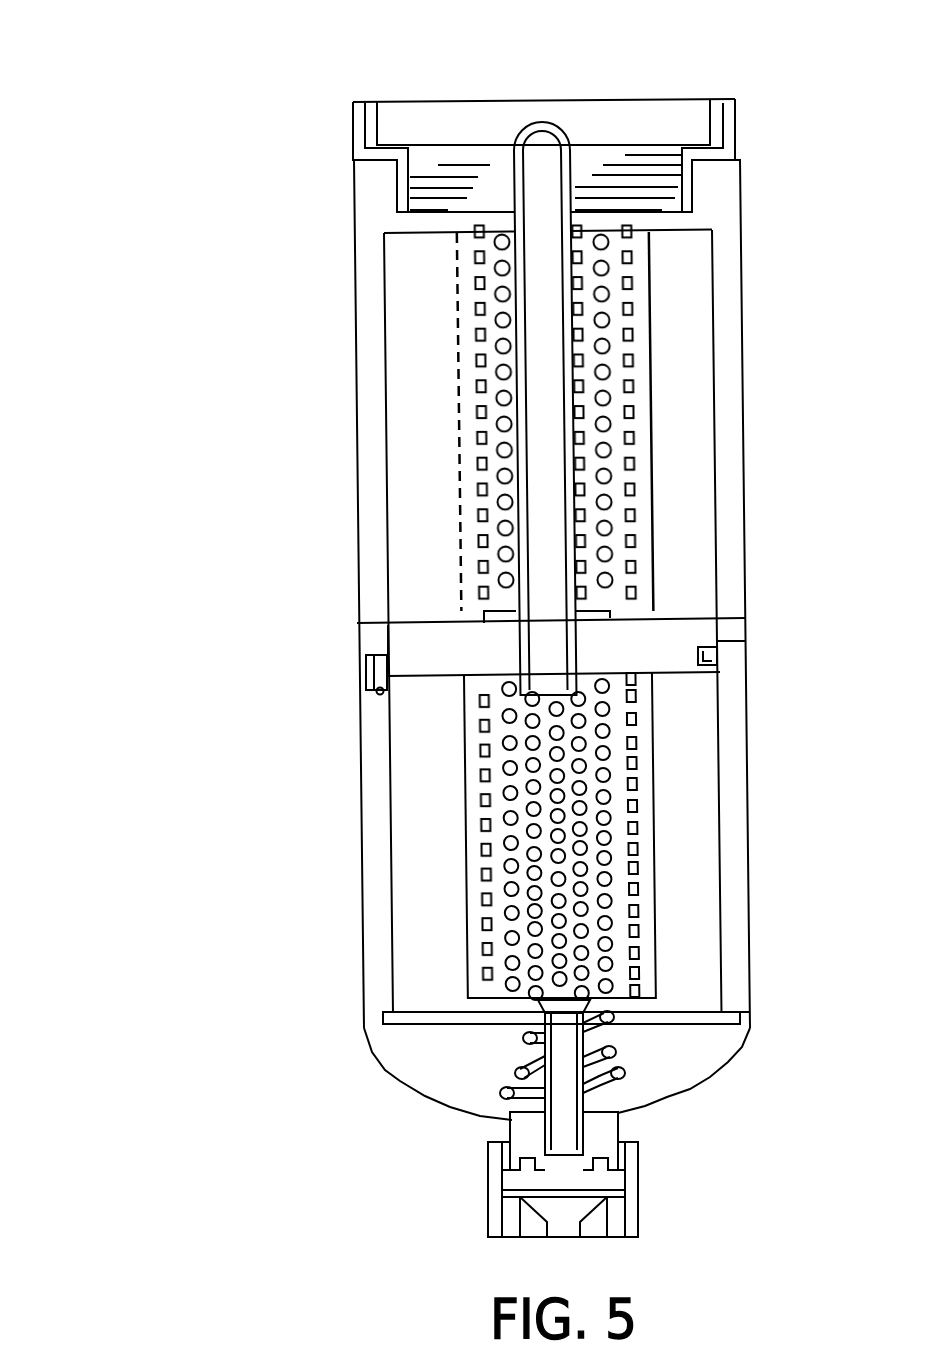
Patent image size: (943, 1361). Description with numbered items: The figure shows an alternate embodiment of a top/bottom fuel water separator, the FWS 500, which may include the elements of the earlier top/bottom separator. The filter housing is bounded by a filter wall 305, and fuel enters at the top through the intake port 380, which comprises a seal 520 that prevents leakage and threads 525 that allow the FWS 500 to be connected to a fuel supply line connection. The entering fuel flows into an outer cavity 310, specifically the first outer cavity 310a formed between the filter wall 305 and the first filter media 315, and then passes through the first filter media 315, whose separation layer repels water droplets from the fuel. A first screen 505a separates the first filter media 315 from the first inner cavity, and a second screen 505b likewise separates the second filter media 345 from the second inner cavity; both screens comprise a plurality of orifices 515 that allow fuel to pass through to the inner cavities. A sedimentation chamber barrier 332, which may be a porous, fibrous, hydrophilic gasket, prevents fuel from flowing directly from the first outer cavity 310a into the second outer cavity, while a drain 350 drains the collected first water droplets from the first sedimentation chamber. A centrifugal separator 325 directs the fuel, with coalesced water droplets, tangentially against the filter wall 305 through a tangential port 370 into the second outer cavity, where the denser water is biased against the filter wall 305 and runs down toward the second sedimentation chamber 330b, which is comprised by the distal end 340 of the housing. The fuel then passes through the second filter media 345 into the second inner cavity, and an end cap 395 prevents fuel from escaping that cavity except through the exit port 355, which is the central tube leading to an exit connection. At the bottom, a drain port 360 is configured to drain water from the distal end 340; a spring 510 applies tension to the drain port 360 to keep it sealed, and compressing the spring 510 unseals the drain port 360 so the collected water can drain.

The top/bottom FWS 500 is at (100, 50).
The filter wall 305 is at (353, 190).
The outer cavity 310 is at (372, 291).
The first outer cavity 310a is at (378, 638).
The first filter media 315 is at (402, 382).
The centrifugal separator 325 is at (382, 640).
The sedimentation chamber barrier 332 is at (733, 625).
The distal end 340 is at (380, 1063).
The second filter media 345 is at (690, 798).
The drain 350 is at (360, 673).
The exit port 355 is at (578, 428).
The drain port 360 is at (640, 1177).
The tangential port 370 is at (722, 653).
The intake port 380 is at (432, 162).
The end cap 395 is at (755, 1023).
The first screen 505a is at (471, 416).
The second screen 505b is at (480, 805).
The spring 510 is at (620, 1067).
The orifices 515 is at (613, 923).
The seal 520 is at (723, 100).
The threads 525 is at (663, 186).
The second sedimentation chamber 330b is at (468, 1092).